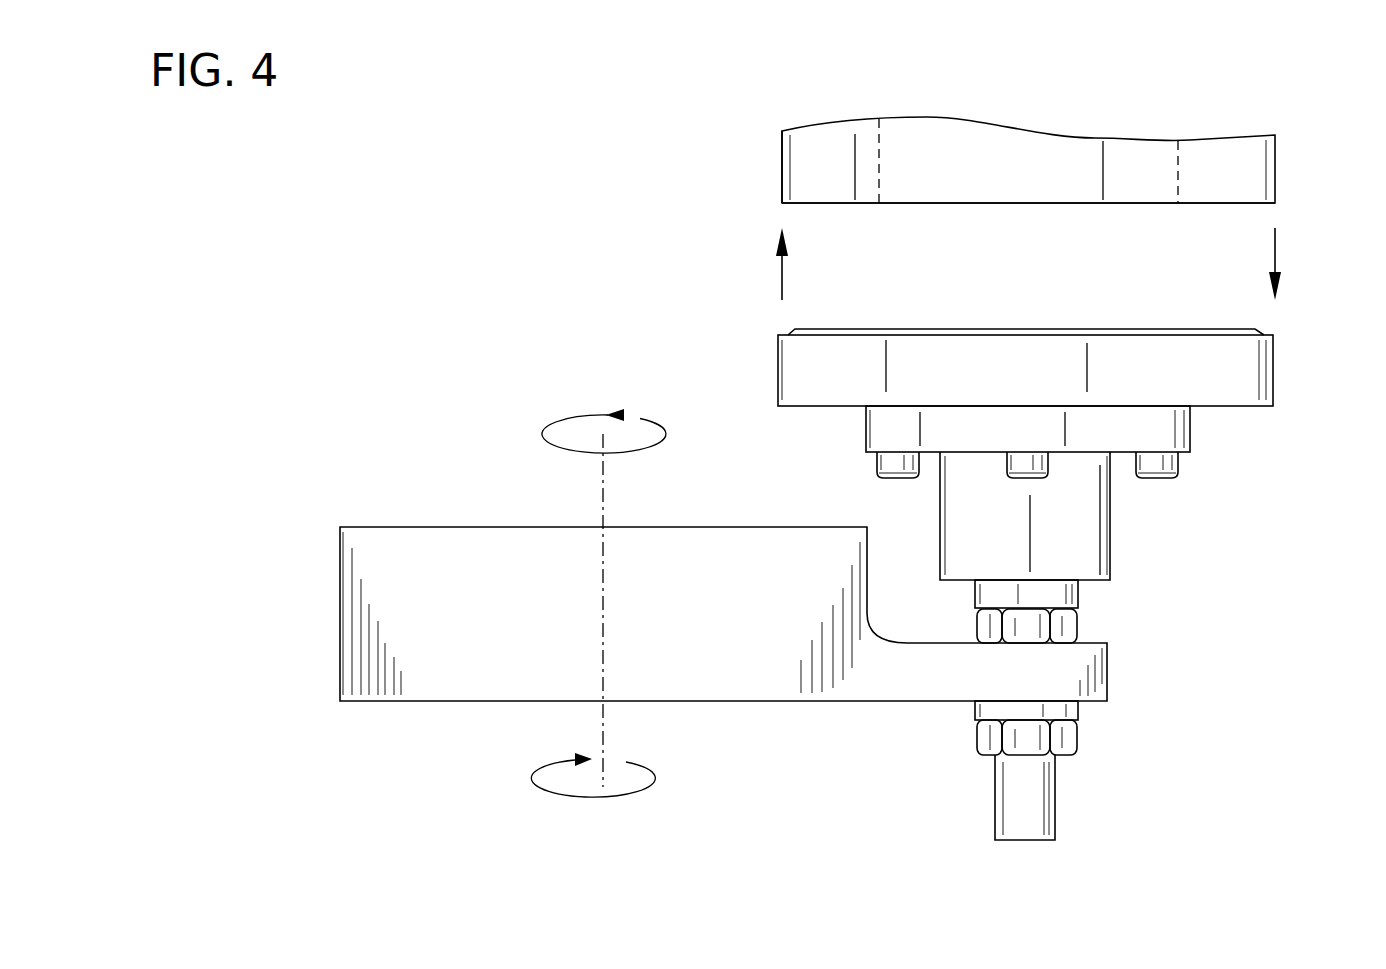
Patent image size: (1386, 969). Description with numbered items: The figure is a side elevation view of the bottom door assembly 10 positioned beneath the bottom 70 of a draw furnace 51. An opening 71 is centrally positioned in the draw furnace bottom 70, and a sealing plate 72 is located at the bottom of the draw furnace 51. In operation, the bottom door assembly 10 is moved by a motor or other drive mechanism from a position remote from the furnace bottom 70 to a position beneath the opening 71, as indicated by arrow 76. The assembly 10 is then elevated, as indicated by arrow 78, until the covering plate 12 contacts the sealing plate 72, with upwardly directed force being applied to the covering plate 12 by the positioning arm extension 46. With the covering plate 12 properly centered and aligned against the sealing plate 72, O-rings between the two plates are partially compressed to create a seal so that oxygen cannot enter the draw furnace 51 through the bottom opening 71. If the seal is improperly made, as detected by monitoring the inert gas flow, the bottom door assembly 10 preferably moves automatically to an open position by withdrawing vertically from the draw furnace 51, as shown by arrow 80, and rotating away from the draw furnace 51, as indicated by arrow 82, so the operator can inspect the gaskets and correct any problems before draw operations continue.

The bottom door assembly 10 is at (1174, 563).
The covering plate 12 is at (1274, 366).
The positioning arm extension 46 is at (797, 704).
The draw furnace 51 is at (698, 119).
The bottom of draw furnace 70 is at (782, 160).
The opening 71 is at (963, 205).
The sealing plate 72 is at (815, 203).
The arrow 76 is at (548, 432).
The arrow 78 is at (782, 280).
The arrow 80 is at (1277, 248).
The arrow 82 is at (560, 764).